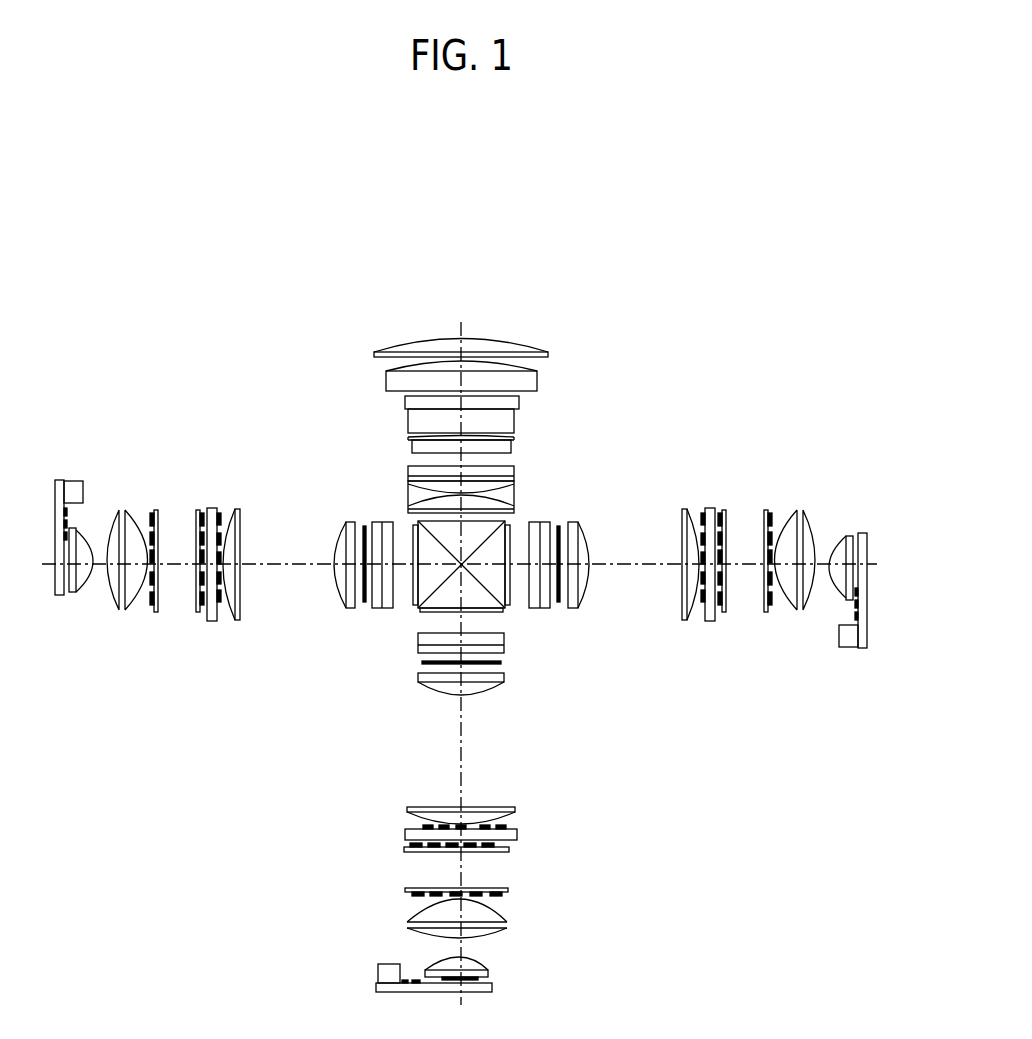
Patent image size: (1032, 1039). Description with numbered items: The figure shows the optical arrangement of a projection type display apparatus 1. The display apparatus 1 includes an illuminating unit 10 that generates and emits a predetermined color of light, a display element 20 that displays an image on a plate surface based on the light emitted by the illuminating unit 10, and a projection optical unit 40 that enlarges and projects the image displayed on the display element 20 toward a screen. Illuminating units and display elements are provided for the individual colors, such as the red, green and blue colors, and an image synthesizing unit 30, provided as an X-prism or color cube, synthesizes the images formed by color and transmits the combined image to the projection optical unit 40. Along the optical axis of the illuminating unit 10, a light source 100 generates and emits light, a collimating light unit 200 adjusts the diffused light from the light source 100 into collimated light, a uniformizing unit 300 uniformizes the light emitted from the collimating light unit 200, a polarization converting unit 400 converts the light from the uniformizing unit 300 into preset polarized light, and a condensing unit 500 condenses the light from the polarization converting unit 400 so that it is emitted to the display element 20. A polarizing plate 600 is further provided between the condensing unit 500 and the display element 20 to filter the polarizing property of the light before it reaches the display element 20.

The display apparatus 1 is at (739, 343).
The illuminating unit 10 is at (531, 820).
The display element 20 is at (500, 647).
The image synthesizing unit 30 is at (445, 597).
The projection optical unit 40 is at (550, 447).
The light source 100 is at (492, 983).
The collimating light unit 200 is at (488, 972).
The uniformizing unit 300 is at (508, 849).
The polarization converting unit 400 is at (407, 836).
The condensing unit 500 is at (432, 687).
The polarizing plate 600 is at (497, 662).